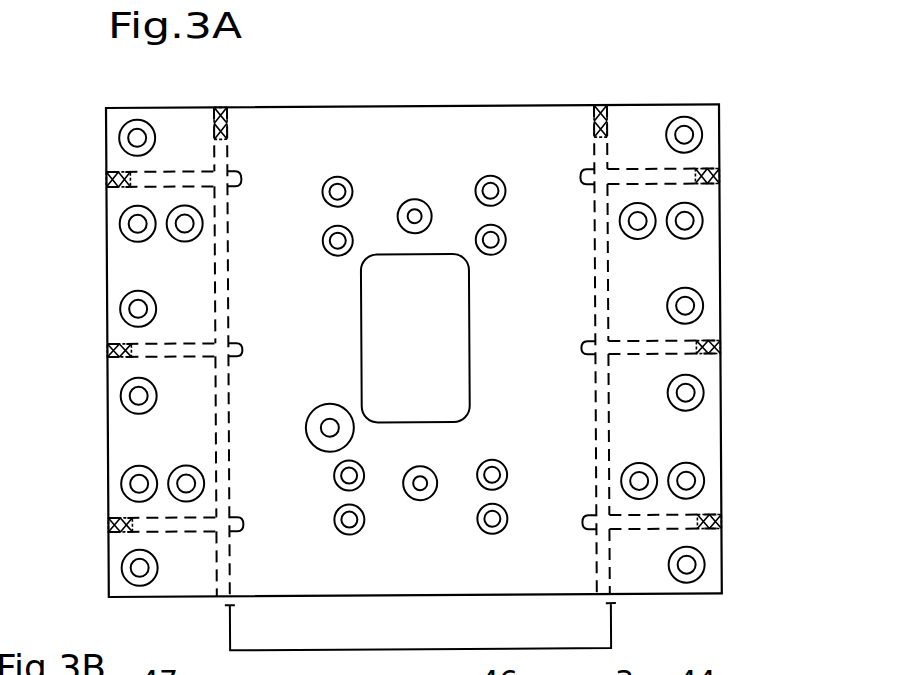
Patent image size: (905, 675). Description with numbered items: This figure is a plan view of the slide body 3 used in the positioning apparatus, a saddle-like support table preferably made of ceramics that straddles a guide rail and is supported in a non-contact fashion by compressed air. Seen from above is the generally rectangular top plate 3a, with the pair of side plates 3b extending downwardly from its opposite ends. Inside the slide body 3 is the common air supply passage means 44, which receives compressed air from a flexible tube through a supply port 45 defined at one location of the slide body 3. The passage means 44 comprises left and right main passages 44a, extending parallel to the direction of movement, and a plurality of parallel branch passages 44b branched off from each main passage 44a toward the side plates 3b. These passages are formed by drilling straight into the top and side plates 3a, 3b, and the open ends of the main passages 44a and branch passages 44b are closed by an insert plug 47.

The slide body 3 is at (526, 104).
The top plate 3a is at (400, 142).
The side plates 3b is at (700, 272).
The common air supply passage means 44 is at (415, 376).
The left and right main passages 44a is at (412, 350).
The branch passages 44b is at (612, 447).
The supply port 45 is at (712, 348).
The insert plug 47 is at (247, 107).